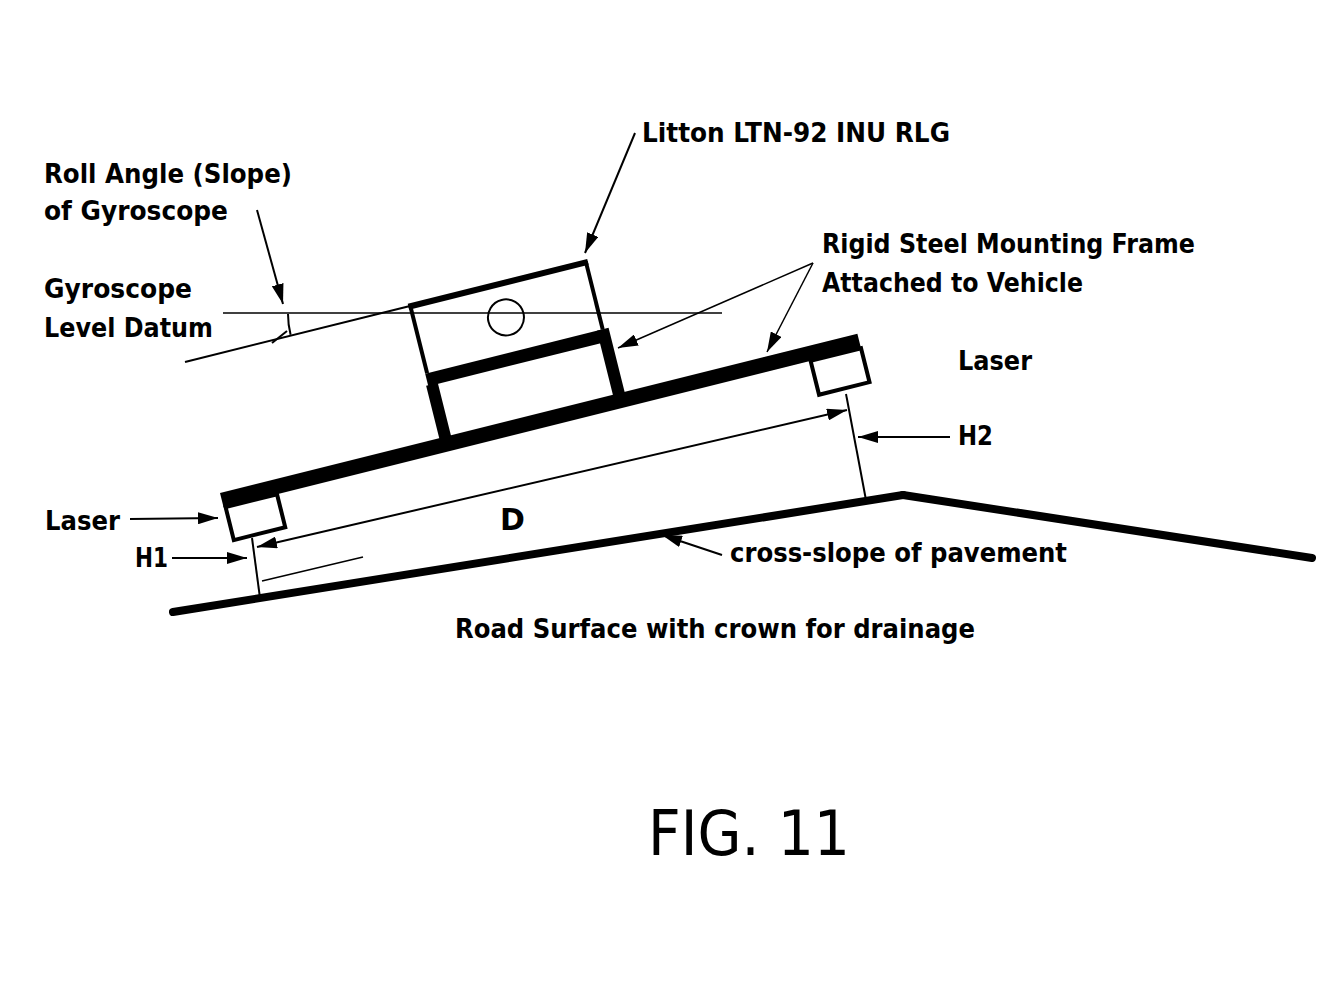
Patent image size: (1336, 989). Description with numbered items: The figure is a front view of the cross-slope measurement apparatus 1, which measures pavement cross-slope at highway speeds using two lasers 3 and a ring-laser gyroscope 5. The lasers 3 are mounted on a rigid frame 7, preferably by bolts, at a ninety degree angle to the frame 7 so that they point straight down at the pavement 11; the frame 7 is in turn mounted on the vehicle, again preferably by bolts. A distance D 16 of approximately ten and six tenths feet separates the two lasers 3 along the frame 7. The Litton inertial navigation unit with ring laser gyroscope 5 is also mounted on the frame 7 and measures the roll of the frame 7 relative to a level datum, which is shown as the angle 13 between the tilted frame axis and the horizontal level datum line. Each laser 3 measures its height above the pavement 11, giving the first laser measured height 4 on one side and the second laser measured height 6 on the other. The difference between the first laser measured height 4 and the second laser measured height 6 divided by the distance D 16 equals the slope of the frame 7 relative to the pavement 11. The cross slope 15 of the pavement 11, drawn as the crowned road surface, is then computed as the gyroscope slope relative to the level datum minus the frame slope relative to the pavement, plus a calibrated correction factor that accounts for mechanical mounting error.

The cross-slope measurement apparatus 1 is at (958, 175).
The lasers 3 is at (277, 513).
The laser measured height H1 4 is at (317, 568).
The ring-laser gyroscope 5 is at (525, 276).
The laser measured height H2 6 is at (857, 462).
The frame 7 is at (432, 420).
The pavement 11 is at (1172, 532).
The angle 13 is at (281, 340).
The cross slope 15 is at (408, 580).
The distance D 16 is at (712, 442).